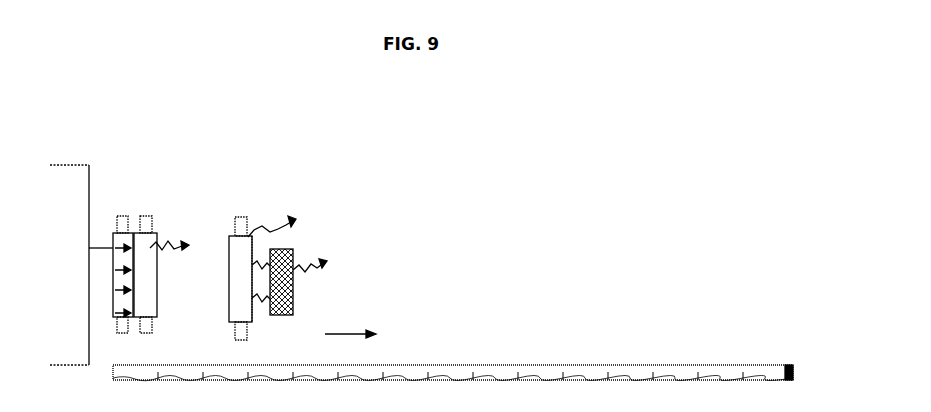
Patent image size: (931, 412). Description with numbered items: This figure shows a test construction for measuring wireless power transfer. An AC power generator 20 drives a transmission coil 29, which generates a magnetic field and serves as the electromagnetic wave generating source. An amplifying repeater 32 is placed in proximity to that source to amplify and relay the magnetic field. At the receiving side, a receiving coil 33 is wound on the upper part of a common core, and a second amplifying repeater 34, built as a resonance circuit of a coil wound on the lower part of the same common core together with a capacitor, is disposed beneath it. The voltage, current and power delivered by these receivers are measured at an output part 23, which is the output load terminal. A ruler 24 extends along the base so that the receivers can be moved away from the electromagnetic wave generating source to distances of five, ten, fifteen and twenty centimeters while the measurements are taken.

The AC power generator 20 is at (72, 177).
The transmission coil 29 is at (120, 218).
The amplifying repeater 32 is at (175, 230).
The receiving coil 33 is at (288, 212).
The output part 23 is at (316, 277).
The amplifying repeater 34 is at (243, 315).
The ruler 24 is at (453, 350).